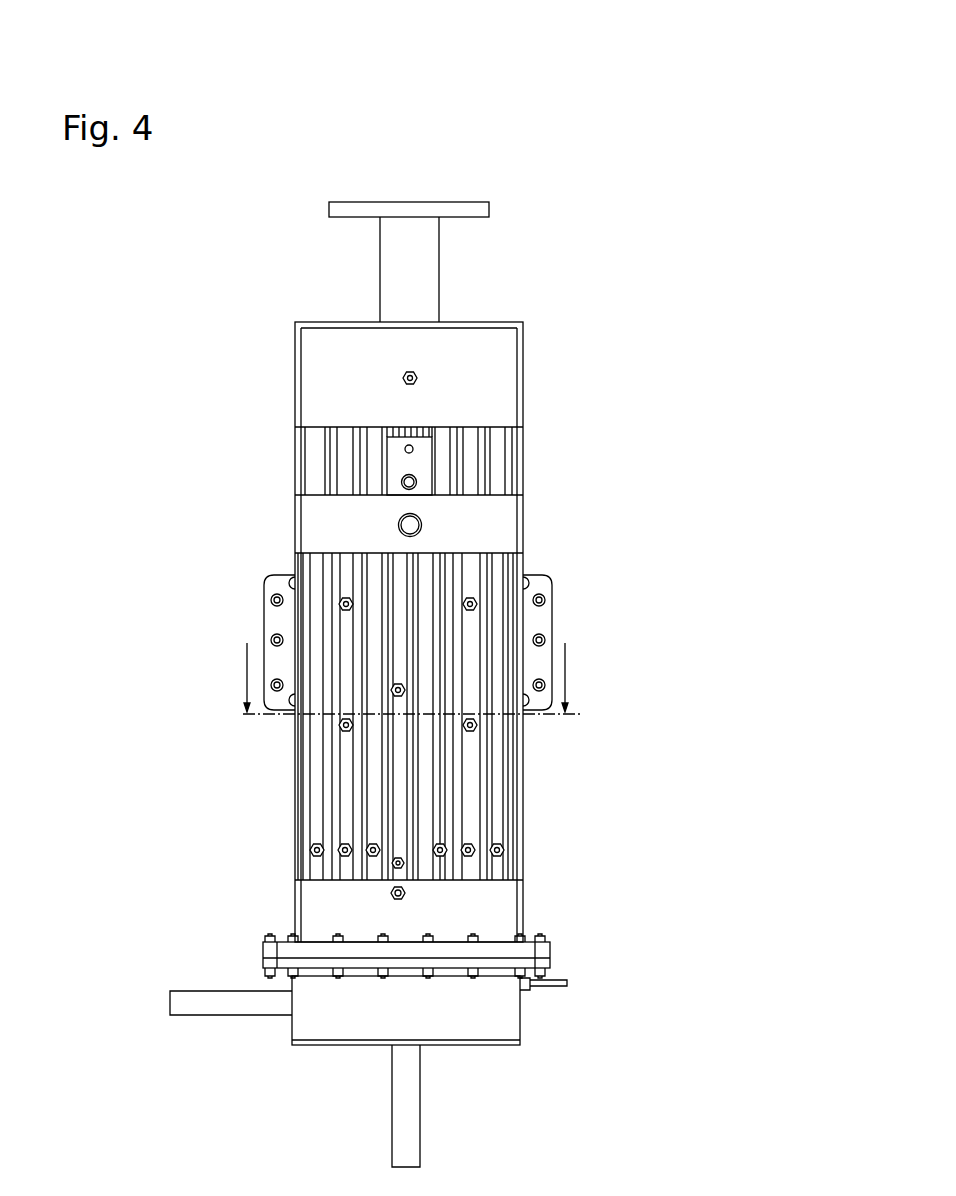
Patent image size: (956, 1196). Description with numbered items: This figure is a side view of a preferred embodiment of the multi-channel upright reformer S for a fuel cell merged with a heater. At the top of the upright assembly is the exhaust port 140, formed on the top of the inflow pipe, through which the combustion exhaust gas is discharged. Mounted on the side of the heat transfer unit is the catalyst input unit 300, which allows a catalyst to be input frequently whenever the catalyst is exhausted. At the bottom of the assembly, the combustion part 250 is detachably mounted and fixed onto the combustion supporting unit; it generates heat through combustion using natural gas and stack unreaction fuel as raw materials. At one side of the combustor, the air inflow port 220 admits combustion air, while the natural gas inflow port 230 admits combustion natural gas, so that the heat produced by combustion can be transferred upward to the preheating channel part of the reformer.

The multi-channel upright reformer S is at (626, 126).
The exhaust port 140 is at (417, 210).
The catalyst input unit 300 is at (549, 618).
The combustion part 250 is at (595, 1020).
The air inflow port 220 is at (176, 1003).
The natural gas inflow port 230 is at (400, 1092).